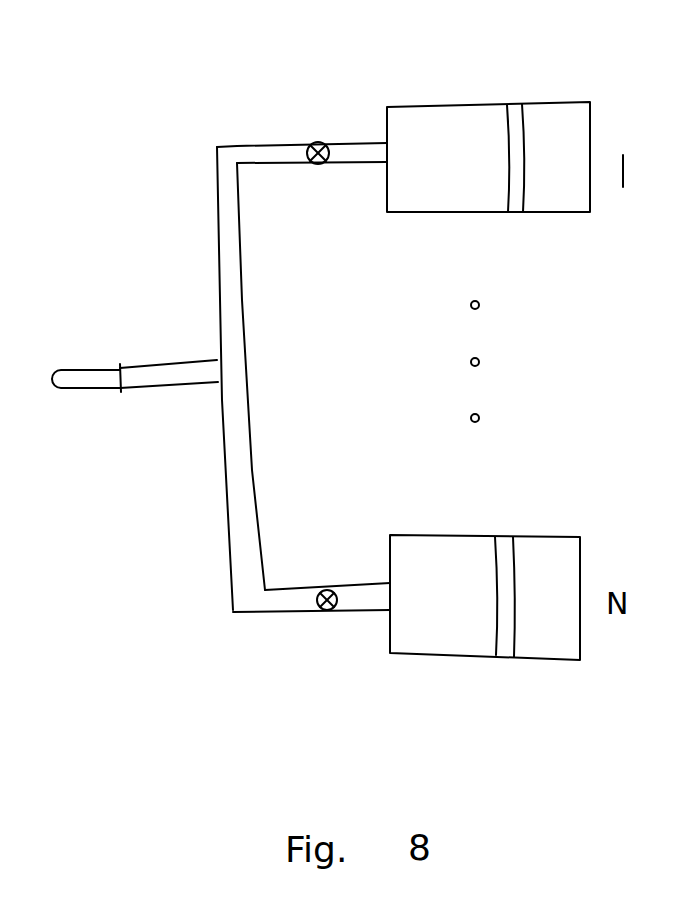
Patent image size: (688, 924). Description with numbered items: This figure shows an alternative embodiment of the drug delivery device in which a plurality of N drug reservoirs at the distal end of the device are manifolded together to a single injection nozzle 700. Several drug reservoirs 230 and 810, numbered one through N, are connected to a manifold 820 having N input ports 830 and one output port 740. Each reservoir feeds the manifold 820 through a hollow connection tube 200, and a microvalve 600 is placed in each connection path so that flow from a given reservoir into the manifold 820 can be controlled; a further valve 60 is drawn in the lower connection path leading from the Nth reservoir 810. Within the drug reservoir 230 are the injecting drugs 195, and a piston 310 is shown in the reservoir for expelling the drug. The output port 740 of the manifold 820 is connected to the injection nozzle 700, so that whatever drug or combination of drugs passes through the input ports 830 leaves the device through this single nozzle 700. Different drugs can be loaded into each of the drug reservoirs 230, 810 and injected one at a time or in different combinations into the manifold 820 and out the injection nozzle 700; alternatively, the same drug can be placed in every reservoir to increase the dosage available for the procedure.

The manifold 820 is at (240, 216).
The input port 830 is at (238, 157).
The microvalve 600 is at (317, 140).
The drug reservoir 230 is at (461, 103).
The injecting drugs 195 is at (439, 178).
The piston 310 is at (515, 215).
The injection nozzle 700 is at (82, 392).
The output port 740 is at (119, 363).
The hollow connection tube 200 is at (361, 582).
The valve 60 is at (328, 613).
The drug reservoir 810 is at (457, 533).